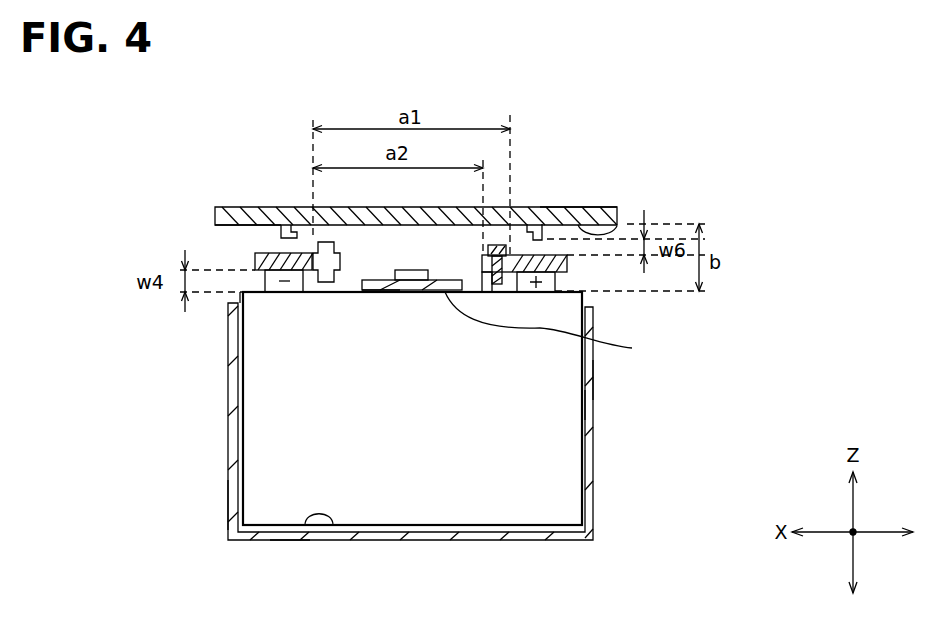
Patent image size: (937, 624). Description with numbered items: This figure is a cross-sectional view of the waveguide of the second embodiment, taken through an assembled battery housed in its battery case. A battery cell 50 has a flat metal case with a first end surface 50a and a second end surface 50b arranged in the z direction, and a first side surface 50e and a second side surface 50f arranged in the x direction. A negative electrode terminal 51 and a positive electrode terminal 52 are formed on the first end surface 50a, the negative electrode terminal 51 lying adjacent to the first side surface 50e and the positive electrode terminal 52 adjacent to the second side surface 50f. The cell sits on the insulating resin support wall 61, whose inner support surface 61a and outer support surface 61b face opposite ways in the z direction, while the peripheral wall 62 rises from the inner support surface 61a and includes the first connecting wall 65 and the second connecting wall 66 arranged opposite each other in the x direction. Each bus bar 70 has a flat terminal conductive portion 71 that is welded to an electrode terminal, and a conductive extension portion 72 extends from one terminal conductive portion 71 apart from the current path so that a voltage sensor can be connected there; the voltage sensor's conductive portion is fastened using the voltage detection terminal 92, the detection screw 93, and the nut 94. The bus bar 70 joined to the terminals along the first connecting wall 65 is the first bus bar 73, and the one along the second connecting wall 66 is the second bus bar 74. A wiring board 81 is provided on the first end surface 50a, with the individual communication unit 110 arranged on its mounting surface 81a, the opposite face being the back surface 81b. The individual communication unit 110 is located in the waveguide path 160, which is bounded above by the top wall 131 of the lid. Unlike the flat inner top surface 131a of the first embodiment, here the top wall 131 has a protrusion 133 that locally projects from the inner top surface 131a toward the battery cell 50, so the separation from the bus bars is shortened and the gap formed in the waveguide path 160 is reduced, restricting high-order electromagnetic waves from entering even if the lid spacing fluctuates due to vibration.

The waveguide path 160 is at (399, 206).
The protrusion 133 is at (274, 225).
The detection screw 93 is at (293, 236).
The top wall 131 is at (611, 206).
The inner top surface 131a is at (597, 222).
The first bus bar 73 is at (241, 248).
The nut 94 is at (268, 256).
The voltage detection terminal 92 is at (298, 254).
The negative electrode terminal 51 is at (262, 281).
The wiring board 81 is at (455, 281).
The mounting surface 81a is at (372, 281).
The individual communication unit 110 is at (415, 270).
The back surface 81b is at (561, 324).
The bus bar 70 is at (513, 158).
The conductive extension portion 72 is at (505, 247).
The terminal conductive portion 71 is at (544, 255).
The second bus bar 74 is at (585, 256).
The positive electrode terminal 52 is at (556, 283).
The support wall 61 is at (458, 540).
The inner support surface 61a is at (333, 526).
The outer support surface 61b is at (290, 541).
The battery cell 50 is at (237, 447).
The first end surface 50a is at (238, 291).
The first connecting wall 65 is at (237, 395).
The first side surface 50e is at (245, 500).
The second side surface 50f is at (583, 433).
The peripheral wall 62 is at (605, 383).
The second connecting wall 66 is at (590, 400).
The second end surface 50b is at (515, 541).